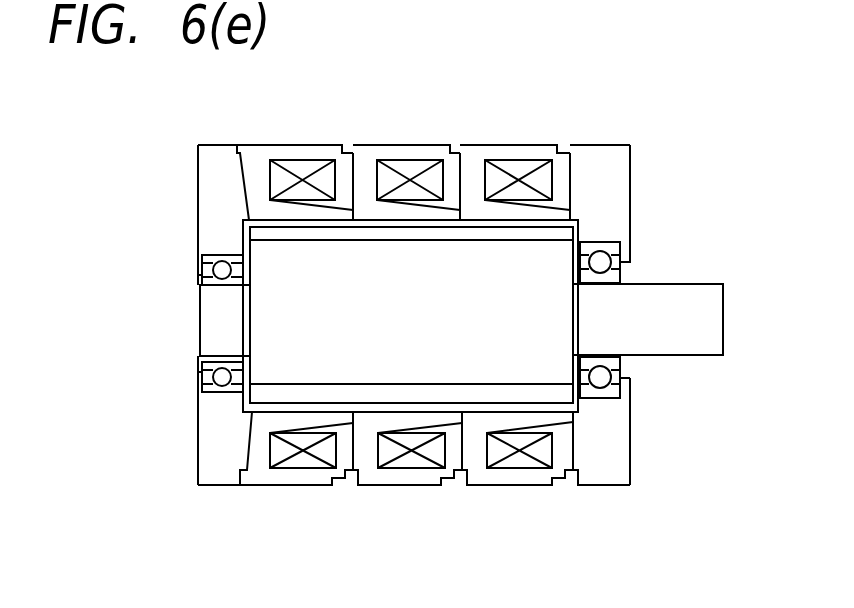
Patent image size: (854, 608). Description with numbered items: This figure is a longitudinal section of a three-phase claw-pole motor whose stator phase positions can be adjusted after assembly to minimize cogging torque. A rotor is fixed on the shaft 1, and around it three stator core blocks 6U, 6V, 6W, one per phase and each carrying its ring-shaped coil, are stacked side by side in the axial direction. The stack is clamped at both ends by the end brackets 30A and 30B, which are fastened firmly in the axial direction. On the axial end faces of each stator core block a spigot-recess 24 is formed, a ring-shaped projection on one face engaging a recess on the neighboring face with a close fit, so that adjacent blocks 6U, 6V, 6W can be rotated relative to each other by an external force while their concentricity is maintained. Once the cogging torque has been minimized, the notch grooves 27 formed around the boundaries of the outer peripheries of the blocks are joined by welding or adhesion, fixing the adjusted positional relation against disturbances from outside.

The shaft 1 is at (223, 318).
The stator core block 6U is at (517, 155).
The stator core block 6V is at (405, 155).
The stator core block 6W is at (302, 155).
The spigot-recess 24 is at (452, 155).
The notch groove 27 is at (348, 482).
The end bracket 30A is at (602, 188).
The end bracket 30B is at (223, 202).